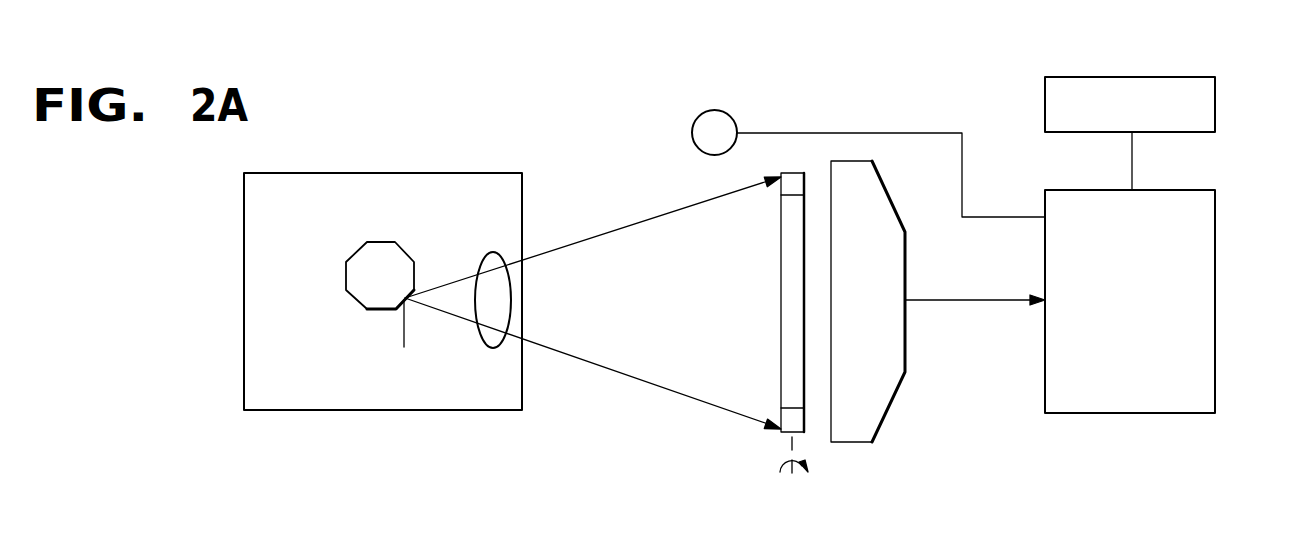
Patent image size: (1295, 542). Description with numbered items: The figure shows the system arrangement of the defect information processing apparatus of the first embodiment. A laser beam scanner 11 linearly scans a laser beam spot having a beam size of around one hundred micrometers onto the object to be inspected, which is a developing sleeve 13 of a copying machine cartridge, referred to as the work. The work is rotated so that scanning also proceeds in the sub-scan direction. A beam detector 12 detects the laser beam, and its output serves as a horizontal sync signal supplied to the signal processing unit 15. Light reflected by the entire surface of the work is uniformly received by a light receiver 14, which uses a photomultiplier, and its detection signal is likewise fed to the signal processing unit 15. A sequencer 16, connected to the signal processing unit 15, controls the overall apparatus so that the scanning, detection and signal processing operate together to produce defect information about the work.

The laser beam scanner 11 is at (298, 170).
The beam detector 12 is at (690, 134).
The developing sleeve 13 is at (781, 300).
The light receiver 14 is at (893, 402).
The signal processing unit 15 is at (1217, 300).
The sequencer 16 is at (1217, 105).